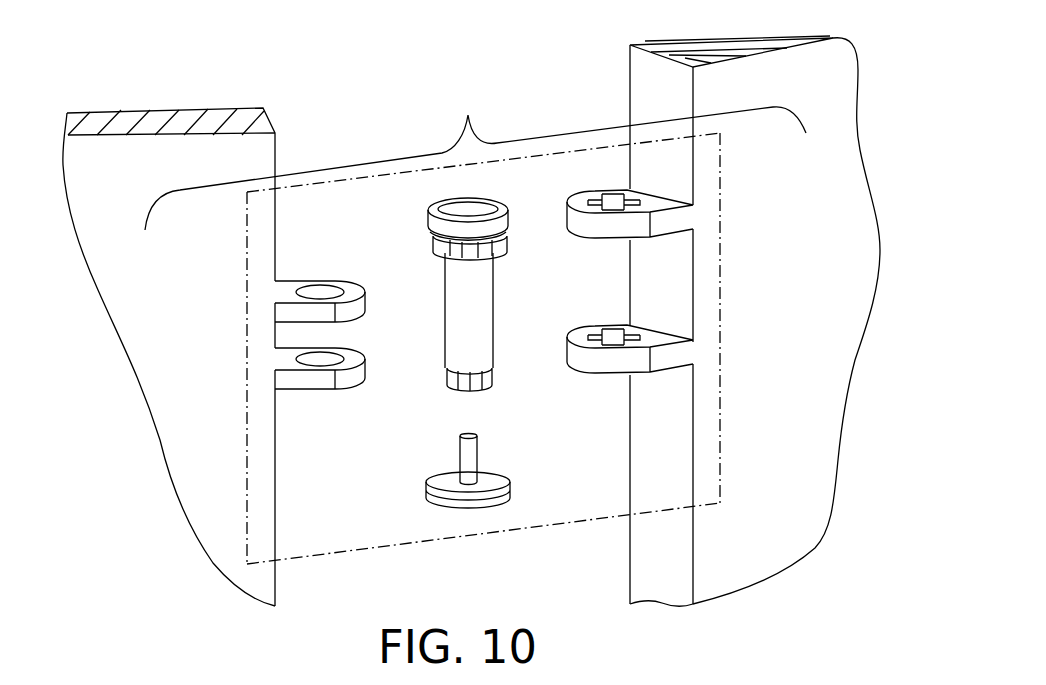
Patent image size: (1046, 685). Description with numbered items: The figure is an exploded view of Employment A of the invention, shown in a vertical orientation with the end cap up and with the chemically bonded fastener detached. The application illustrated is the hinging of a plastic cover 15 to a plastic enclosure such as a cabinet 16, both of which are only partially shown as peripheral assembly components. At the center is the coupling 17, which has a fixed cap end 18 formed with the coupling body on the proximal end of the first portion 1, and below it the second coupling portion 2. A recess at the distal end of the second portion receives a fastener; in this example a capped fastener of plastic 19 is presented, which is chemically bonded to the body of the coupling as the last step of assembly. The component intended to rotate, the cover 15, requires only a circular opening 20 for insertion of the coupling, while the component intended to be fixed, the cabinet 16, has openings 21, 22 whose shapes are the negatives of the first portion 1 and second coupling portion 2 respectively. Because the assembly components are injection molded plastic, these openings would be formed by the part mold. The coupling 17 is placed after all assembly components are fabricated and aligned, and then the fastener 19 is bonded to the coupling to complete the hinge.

The first portion 1 is at (450, 243).
The second coupling portion 2 is at (452, 377).
The plastic cover 15 is at (172, 350).
The cabinet 16 is at (785, 310).
The coupling 17 is at (468, 304).
The fixed cap end 18 is at (468, 210).
The capped fastener 19 is at (478, 495).
The circular opening 20 is at (322, 290).
The opening 21 is at (607, 200).
The opening 22 is at (608, 335).